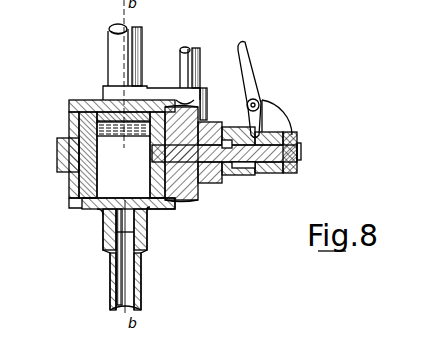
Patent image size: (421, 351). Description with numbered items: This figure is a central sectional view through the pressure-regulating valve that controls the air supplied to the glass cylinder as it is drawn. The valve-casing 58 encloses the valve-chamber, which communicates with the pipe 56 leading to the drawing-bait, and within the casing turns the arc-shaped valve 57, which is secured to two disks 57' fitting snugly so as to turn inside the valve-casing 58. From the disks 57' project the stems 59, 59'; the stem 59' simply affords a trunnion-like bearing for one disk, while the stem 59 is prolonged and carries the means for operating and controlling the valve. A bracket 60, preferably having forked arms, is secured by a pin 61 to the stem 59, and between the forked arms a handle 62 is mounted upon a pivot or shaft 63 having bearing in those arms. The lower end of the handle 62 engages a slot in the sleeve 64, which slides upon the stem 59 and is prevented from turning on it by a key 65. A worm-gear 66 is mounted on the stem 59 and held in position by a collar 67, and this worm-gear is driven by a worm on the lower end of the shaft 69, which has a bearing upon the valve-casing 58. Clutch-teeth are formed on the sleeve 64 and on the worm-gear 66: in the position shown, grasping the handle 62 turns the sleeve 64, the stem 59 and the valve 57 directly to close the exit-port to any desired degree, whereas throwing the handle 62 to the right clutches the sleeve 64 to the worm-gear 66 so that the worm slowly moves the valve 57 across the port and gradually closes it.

The pipe 56 is at (117, 50).
The shaft 69 is at (188, 68).
The valve 57 is at (135, 180).
The disks 57' is at (122, 159).
The valve-casing 58 is at (97, 212).
The stem 59 is at (258, 150).
The stem 59' is at (44, 155).
The bracket 60 is at (278, 118).
The pin 61 is at (285, 173).
The handle 62 is at (243, 50).
The pivot or shaft 63 is at (259, 100).
The sleeve 64 is at (258, 173).
The key 65 is at (250, 173).
The worm-gear 66 is at (198, 190).
The collar 67 is at (215, 137).